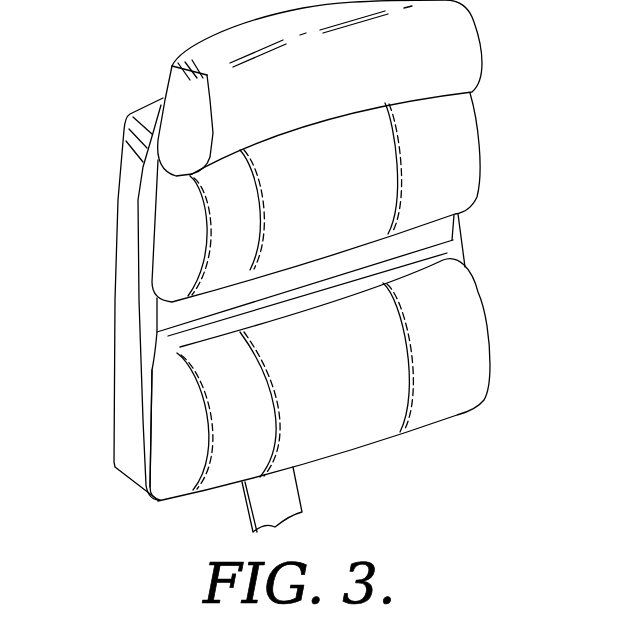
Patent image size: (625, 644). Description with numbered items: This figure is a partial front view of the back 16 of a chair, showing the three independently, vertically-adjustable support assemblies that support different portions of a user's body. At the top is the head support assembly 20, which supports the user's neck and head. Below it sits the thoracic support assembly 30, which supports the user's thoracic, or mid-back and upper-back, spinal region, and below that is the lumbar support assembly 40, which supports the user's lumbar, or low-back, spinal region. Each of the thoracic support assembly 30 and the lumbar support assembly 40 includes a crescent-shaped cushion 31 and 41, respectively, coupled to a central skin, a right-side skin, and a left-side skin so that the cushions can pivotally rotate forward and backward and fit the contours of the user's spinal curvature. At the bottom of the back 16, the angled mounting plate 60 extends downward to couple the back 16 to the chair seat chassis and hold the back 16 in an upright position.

The back 16 is at (95, 332).
The head support assembly 20 is at (467, 43).
The thoracic support assembly 30 is at (339, 197).
The crescent-shaped cushion 31 is at (342, 197).
The lumbar support assembly 40 is at (342, 380).
The crescent-shaped cushion 41 is at (356, 384).
The mounting plate 60 is at (303, 500).